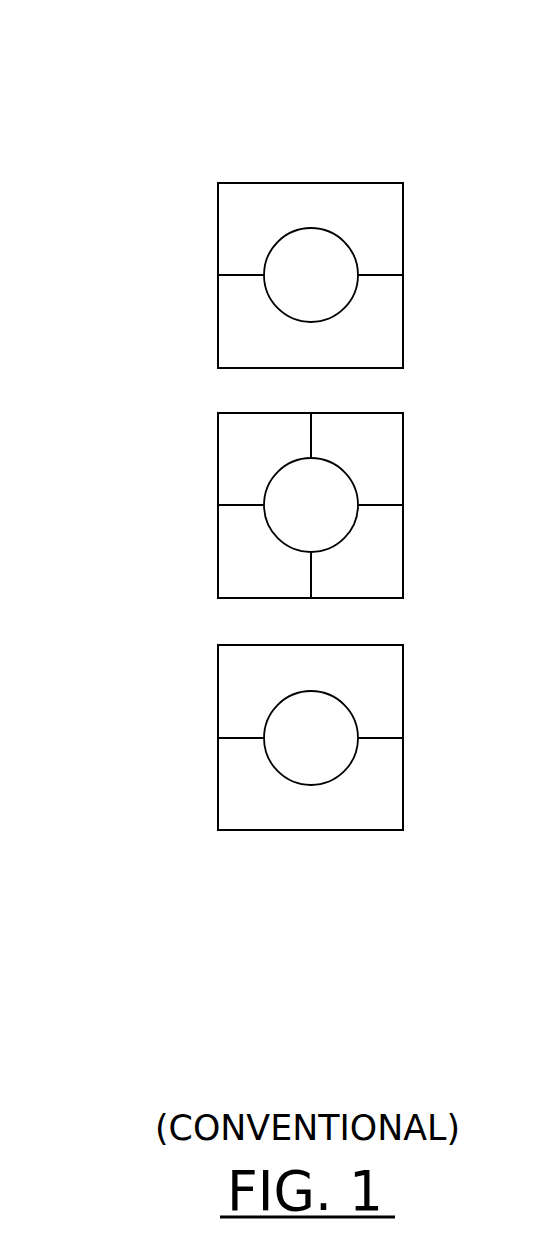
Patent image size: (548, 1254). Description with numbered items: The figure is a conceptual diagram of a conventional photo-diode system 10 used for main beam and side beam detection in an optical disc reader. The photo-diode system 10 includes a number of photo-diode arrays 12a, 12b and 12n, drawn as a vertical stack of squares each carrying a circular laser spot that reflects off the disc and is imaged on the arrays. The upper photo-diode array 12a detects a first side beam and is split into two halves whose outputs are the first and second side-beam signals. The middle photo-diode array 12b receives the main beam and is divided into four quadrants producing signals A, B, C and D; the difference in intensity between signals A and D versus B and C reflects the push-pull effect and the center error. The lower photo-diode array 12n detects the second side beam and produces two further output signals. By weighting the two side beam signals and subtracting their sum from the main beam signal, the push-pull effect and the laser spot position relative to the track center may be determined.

The photo-diode system 10 is at (92, 64).
The photo-diode array 12a is at (363, 183).
The photo-diode array 12b is at (363, 413).
The photo-diode array 12n is at (363, 645).